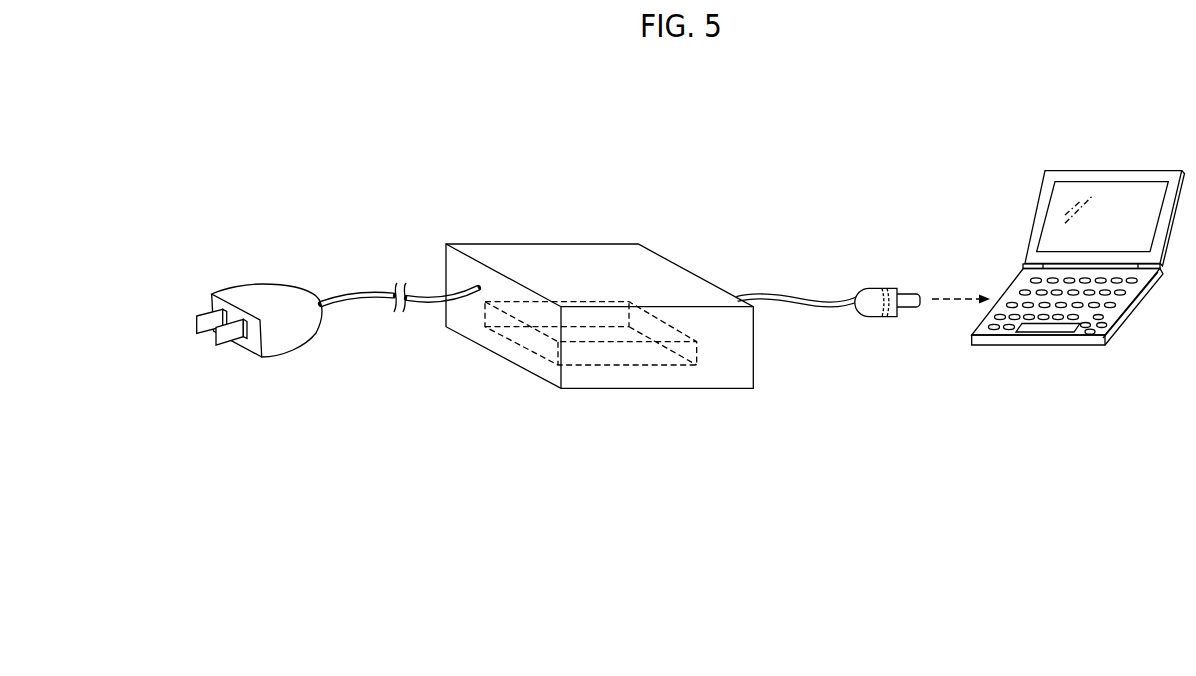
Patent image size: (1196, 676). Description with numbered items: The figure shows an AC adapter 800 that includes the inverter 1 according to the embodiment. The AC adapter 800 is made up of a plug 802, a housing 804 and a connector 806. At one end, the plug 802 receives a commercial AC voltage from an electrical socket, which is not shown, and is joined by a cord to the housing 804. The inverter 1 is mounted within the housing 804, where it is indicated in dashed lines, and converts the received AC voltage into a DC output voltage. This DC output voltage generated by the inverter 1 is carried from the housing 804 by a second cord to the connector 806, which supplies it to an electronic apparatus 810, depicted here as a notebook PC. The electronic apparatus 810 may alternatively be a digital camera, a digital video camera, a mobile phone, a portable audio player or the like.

The AC adapter 800 is at (658, 552).
The plug 802 is at (265, 300).
The housing 804 is at (534, 243).
The inverter 1 is at (618, 352).
The connector 806 is at (875, 285).
The electronic apparatus 810 is at (1122, 166).